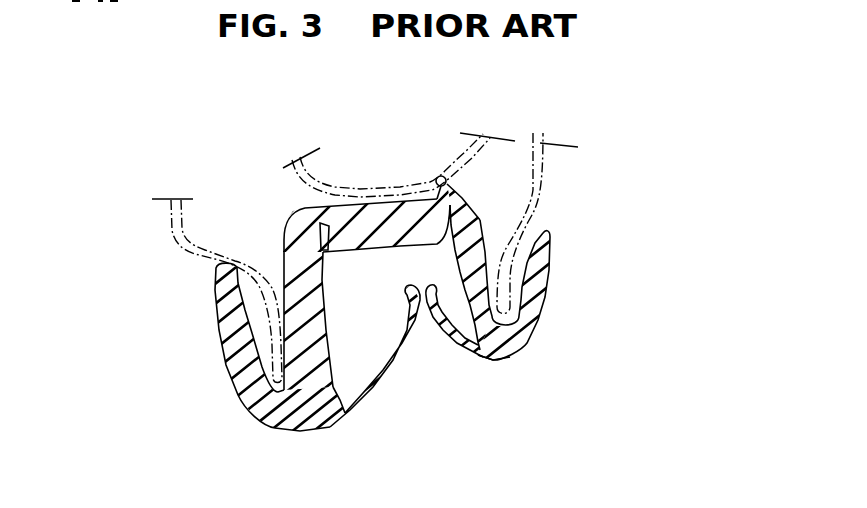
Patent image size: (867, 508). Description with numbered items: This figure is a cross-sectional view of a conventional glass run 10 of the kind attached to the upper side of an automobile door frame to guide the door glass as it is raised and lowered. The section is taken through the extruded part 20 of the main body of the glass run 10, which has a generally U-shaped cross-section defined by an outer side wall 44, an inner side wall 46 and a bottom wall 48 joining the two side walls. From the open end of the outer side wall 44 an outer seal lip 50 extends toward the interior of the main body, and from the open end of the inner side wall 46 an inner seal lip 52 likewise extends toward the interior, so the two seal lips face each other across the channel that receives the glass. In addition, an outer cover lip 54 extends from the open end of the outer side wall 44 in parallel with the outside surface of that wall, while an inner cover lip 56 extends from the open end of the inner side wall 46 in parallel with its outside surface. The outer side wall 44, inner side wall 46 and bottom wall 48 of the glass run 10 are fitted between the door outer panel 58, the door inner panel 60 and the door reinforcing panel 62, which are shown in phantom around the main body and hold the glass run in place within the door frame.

The glass run 10 is at (433, 254).
The extruded part 20 is at (551, 411).
The outer side wall 44 is at (555, 277).
The inner side wall 46 is at (219, 315).
The bottom wall 48 is at (367, 160).
The outer seal lip 50 is at (487, 364).
The inner seal lip 52 is at (400, 378).
The outer cover lip 54 is at (569, 295).
The inner cover lip 56 is at (226, 360).
The door outer panel 58 is at (579, 223).
The door inner panel 60 is at (187, 291).
The door reinforcing panel 62 is at (399, 144).